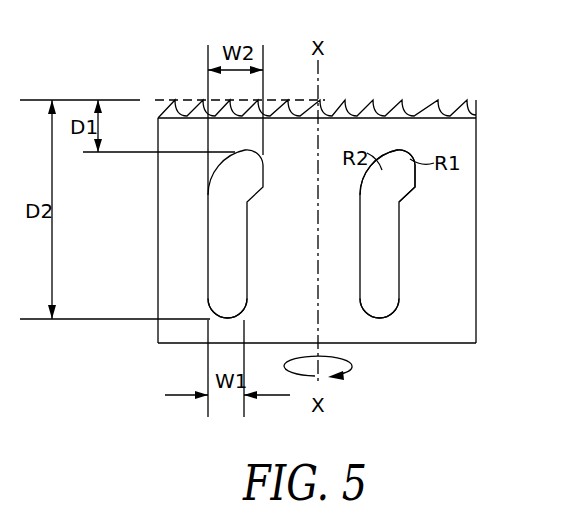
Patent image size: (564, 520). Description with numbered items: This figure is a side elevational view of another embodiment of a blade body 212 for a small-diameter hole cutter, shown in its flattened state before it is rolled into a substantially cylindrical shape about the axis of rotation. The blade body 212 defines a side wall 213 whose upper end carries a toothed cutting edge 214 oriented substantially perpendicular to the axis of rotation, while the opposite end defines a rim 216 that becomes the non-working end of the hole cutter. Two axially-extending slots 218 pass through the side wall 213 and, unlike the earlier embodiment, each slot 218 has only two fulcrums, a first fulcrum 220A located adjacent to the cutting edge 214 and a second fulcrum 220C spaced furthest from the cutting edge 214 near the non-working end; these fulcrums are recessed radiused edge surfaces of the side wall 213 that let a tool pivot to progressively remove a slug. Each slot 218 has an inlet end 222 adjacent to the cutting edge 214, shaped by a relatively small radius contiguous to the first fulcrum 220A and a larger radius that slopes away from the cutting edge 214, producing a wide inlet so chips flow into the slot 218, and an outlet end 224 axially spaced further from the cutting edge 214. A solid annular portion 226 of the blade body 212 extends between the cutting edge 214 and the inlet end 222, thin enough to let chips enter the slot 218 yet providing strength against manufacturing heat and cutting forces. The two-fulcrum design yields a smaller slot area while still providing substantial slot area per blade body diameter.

The blade body 212 is at (150, 207).
The side wall 213 is at (457, 315).
The cutting edge 214 is at (437, 113).
The rim 216 is at (429, 343).
The slot 218 is at (221, 245).
The first fulcrum 220A is at (412, 187).
The second fulcrum 220C is at (378, 318).
The inlet end 222 is at (393, 149).
The outlet end 224 is at (227, 318).
The annular portion 226 is at (384, 143).